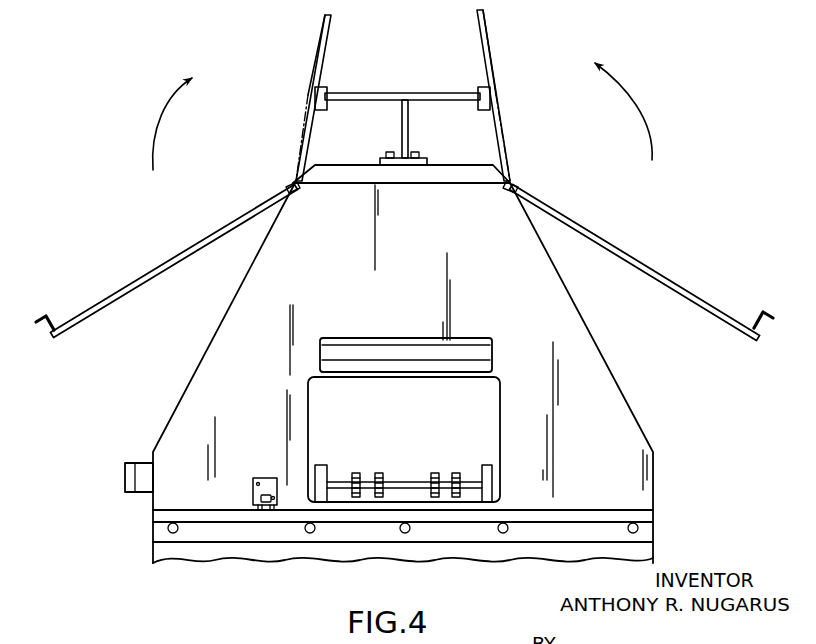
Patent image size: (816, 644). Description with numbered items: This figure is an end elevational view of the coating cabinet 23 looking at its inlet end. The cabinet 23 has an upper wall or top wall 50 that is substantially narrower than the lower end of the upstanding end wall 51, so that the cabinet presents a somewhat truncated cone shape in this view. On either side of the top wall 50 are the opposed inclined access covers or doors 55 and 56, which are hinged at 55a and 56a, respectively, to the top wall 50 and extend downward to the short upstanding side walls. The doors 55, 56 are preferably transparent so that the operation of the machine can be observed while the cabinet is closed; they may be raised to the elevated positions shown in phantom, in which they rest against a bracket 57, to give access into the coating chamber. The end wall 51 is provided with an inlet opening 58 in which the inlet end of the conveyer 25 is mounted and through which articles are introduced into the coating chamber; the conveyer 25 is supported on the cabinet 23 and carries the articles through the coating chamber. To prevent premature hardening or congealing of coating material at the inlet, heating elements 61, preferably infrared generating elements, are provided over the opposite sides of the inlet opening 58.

The coating cabinet 23 is at (605, 240).
The conveyer 25 is at (439, 468).
The top wall 50 is at (445, 165).
The end wall 51 is at (535, 297).
The access door 55 is at (151, 274).
The hinge 55a is at (296, 182).
The access door 56 is at (667, 277).
The hinge 56a is at (505, 182).
The bracket 57 is at (396, 92).
The inlet opening 58 is at (500, 395).
The heating element 61 is at (456, 342).